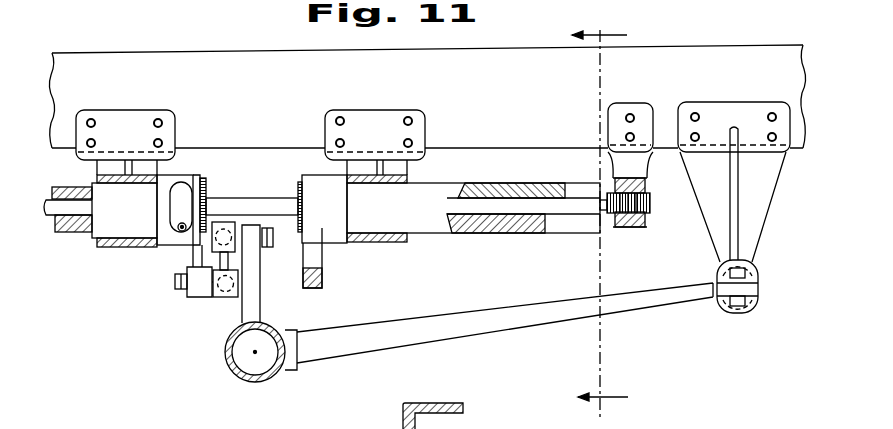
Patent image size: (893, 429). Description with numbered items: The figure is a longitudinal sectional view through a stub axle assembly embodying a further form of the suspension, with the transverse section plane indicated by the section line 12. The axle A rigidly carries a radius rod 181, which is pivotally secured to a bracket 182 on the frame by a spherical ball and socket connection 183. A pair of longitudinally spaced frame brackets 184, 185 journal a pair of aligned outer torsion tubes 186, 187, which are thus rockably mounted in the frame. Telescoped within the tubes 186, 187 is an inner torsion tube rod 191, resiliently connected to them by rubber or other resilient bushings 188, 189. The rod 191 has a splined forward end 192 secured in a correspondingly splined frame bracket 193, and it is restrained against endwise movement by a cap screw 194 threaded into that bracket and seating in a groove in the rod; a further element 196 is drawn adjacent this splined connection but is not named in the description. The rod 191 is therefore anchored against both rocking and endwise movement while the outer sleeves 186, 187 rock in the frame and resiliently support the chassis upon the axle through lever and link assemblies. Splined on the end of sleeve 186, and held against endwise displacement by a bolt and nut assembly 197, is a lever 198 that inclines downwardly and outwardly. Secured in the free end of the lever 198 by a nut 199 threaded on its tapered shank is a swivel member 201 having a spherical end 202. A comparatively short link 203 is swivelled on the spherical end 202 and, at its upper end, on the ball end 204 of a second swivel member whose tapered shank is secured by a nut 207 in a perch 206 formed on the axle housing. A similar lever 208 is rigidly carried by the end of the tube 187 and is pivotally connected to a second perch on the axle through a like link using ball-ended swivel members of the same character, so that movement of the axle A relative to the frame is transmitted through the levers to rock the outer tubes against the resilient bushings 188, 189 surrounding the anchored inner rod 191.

The section line 12- 12 is at (600, 219).
The radius rod 181 is at (463, 333).
The bracket 182 is at (757, 232).
The spherical ball and socket connection 183 is at (748, 313).
The frame bracket 184 is at (127, 120).
The frame bracket 185 is at (372, 117).
The outer torsion tube 186 is at (80, 235).
The outer torsion tube 187 is at (515, 234).
The resilient bushing 188 is at (67, 189).
The resilient bushing 189 is at (506, 182).
The inner torsion tube rod 191 is at (55, 233).
The splined forward end 192 is at (650, 203).
The splined frame bracket 193 is at (622, 113).
The cap screw 194 is at (637, 227).
The bearing frame 196 is at (640, 177).
The bolt and nut assembly 197 is at (180, 183).
The lever 198 is at (190, 258).
The nut 199 is at (178, 289).
The swivel member 201 is at (212, 283).
The spherical end 202 is at (218, 297).
The link 203 is at (258, 262).
The ball end 204 is at (227, 215).
The perch 206 is at (261, 297).
The nut 207 is at (273, 233).
The lever 208 is at (322, 262).
The axle A is at (242, 377).